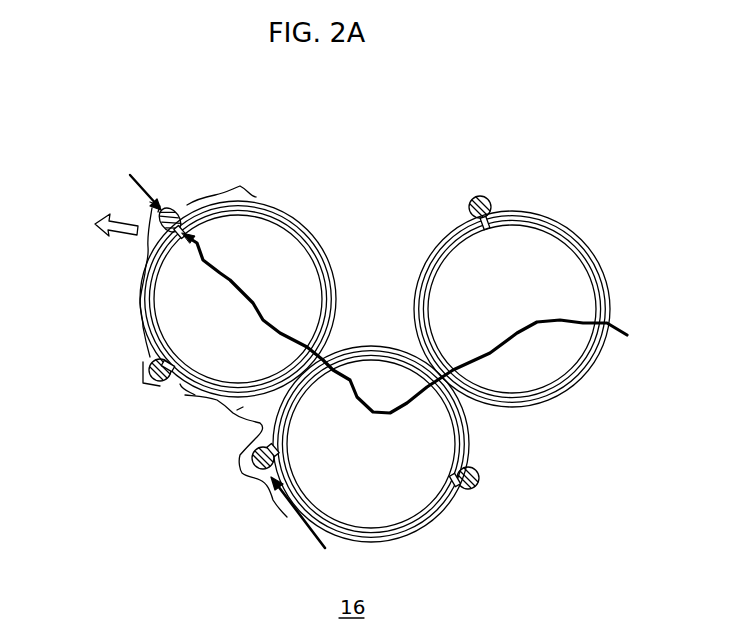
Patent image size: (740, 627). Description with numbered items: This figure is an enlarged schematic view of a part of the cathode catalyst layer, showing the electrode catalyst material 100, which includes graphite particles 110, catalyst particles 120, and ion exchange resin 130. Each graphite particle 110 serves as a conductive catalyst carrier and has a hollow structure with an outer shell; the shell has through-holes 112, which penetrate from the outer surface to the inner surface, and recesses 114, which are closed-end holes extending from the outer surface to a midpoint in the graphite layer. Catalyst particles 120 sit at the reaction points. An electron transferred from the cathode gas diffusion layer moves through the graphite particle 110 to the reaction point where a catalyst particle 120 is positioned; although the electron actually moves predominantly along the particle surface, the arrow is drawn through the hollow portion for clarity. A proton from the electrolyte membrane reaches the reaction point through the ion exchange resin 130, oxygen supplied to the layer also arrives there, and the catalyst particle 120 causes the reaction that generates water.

The electrode catalyst material 100 is at (419, 156).
The graphite particle 110 is at (303, 206).
The through-hole 112 is at (177, 240).
The recess 114 is at (175, 356).
The catalyst particle 120 is at (183, 210).
The ion exchange resin 130 is at (233, 413).